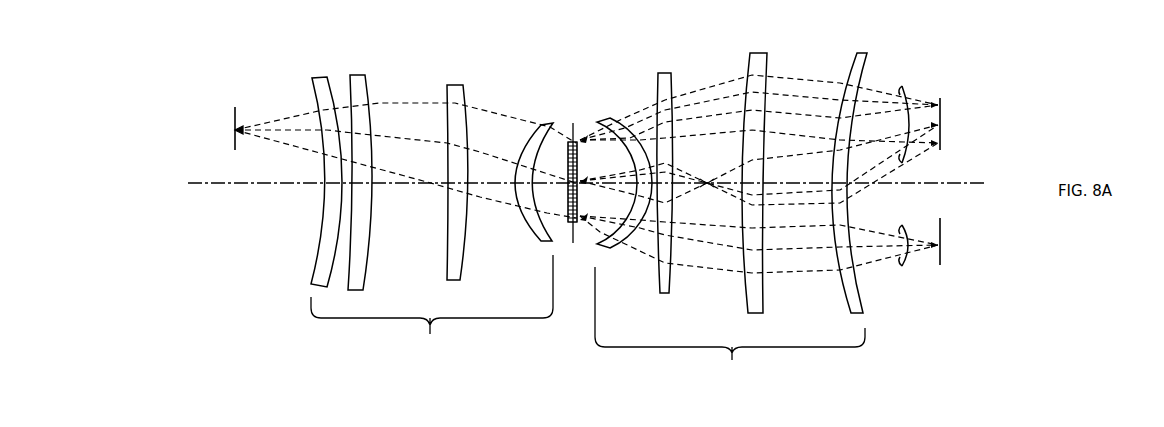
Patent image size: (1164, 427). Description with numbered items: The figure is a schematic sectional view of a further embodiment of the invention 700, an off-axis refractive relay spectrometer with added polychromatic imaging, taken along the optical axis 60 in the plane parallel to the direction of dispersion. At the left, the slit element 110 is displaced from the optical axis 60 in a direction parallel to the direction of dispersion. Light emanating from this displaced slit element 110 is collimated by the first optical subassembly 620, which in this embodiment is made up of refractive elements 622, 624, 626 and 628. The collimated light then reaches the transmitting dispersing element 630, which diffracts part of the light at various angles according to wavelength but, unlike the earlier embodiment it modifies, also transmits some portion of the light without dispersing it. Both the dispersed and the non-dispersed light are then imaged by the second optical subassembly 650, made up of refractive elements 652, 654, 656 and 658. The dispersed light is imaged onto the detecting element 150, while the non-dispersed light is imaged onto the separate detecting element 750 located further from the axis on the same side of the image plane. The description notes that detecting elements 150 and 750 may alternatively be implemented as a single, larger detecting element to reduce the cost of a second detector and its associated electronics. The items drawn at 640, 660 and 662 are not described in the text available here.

The further embodiment of the invention 700 is at (264, 47).
The slit element 110 is at (235, 107).
The optical axis 60 is at (217, 184).
The first optical subassembly 620 is at (428, 198).
The refractive element 622 is at (322, 77).
The refractive element 624 is at (358, 75).
The refractive element 626 is at (455, 85).
The refractive element 628 is at (547, 123).
The intermediate image plane element / array 640 is at (573, 123).
The dispersing element 630 is at (570, 218).
The second optical subassembly 650 is at (757, 201).
The refractive element 652 is at (603, 113).
The refractive element 654 is at (664, 73).
The refractive element 656 is at (757, 53).
The refractive element 658 is at (861, 53).
The thin lens element 660 is at (903, 86).
The thin lens element 662 is at (908, 266).
The detecting element 150 is at (940, 98).
The detecting element 750 is at (940, 265).